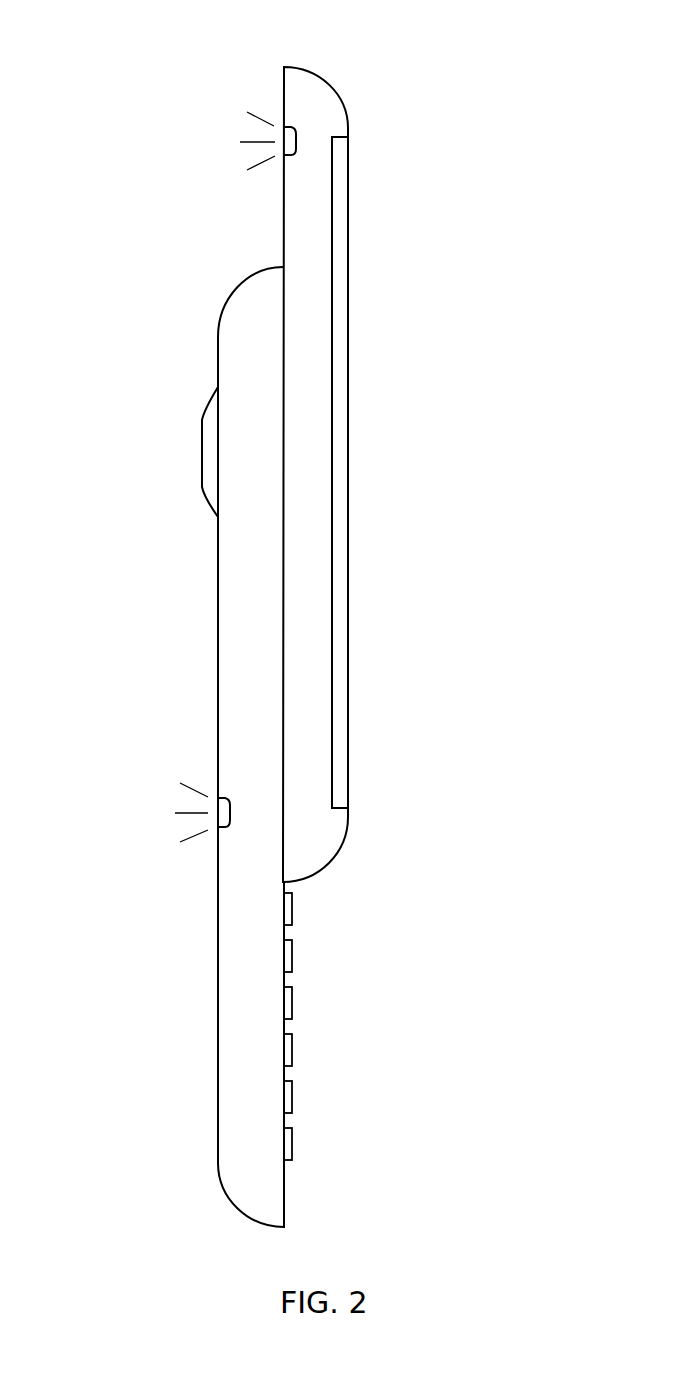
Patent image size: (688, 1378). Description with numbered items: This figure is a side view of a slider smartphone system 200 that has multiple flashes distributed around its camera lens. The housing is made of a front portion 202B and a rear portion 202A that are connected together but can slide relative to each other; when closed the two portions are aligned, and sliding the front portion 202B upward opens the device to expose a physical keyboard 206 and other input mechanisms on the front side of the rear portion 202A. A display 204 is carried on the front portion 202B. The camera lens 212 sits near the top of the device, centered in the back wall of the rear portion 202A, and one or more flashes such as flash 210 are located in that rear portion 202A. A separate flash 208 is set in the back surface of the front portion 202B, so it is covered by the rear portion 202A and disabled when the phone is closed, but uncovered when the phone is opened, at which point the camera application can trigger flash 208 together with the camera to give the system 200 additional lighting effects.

The smartphone system 200 is at (430, 38).
The rear portion 202A is at (218, 338).
The front portion 202B is at (349, 128).
The display 204 is at (348, 317).
The physical keyboard 206 is at (292, 1003).
The flash 208 is at (283, 135).
The flash 210 is at (218, 806).
The camera lens 212 is at (202, 452).